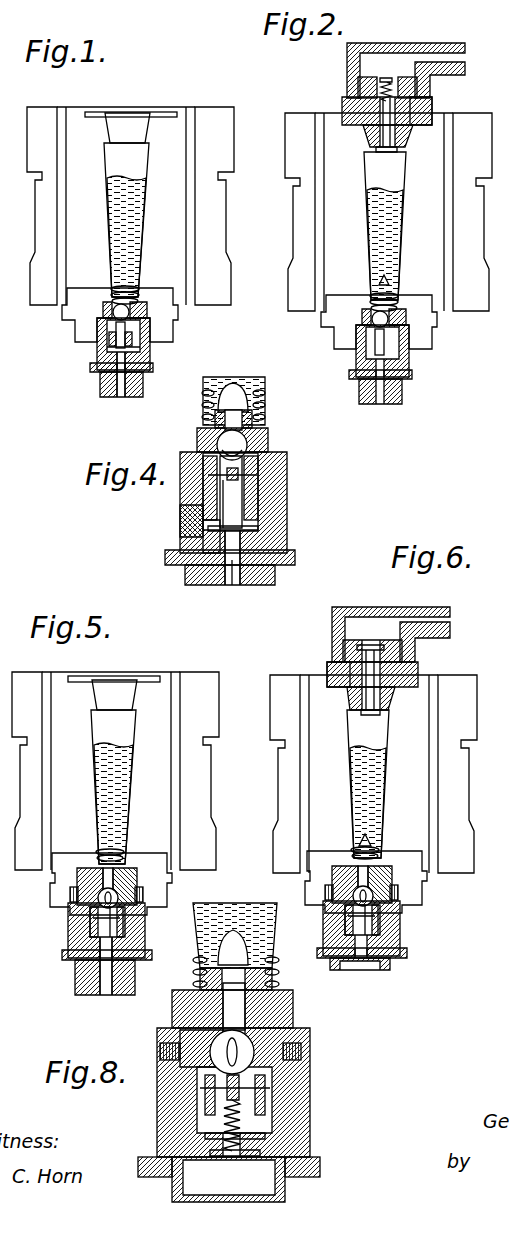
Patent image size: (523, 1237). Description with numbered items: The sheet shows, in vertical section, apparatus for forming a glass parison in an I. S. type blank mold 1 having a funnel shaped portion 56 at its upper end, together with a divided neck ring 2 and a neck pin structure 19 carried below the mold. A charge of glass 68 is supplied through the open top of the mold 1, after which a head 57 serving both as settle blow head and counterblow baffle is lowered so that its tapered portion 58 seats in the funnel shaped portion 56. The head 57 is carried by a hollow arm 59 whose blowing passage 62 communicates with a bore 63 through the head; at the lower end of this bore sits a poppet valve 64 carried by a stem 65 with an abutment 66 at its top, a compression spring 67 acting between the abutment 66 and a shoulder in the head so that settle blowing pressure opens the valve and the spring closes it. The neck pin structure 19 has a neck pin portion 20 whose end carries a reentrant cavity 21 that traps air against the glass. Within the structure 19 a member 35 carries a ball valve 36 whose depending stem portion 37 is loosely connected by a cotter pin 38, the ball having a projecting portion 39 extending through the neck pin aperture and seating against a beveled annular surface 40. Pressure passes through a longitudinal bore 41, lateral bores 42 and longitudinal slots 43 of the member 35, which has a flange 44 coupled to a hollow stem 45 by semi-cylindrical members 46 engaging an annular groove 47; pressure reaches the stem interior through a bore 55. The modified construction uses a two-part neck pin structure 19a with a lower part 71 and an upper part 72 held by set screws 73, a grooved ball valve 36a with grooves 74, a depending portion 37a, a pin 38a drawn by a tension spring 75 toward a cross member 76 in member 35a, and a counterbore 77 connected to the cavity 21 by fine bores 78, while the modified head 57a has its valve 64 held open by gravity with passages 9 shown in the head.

In FIG. 1, the blank mold 1 is at (200, 220).
In FIG. 2, the blank mold 1 is at (462, 227).
In FIG. 5, the blank mold 1 is at (190, 794).
In FIG. 6, the blank mold 1 is at (440, 779).
In FIG. 1, the neck ring 2 is at (165, 331).
In FIG. 2, the neck ring 2 is at (395, 322).
In FIG. 5, the neck ring 2 is at (155, 894).
In FIG. 6, the neck ring 2 is at (376, 873).
In FIG. 6, the passages 9 is at (358, 645).
In FIG. 1, the neck pin structure 19 is at (150, 357).
In FIG. 2, the neck pin structure 19 is at (410, 351).
In FIG. 4, the neck pin structure 19 is at (288, 490).
In FIG. 5, the neck pin structure 19a is at (146, 932).
In FIG. 6, the neck pin structure 19a is at (392, 928).
In FIG. 8, the neck pin structure 19a is at (300, 1112).
In FIG. 1, the neck pin portion 20 is at (136, 305).
In FIG. 2, the neck pin portion 20 is at (402, 231).
In FIG. 4, the neck pin portion 20 is at (266, 420).
In FIG. 4, the reentrant cavity 21 is at (265, 392).
In FIG. 8, the reentrant cavity 21 is at (198, 940).
In FIG. 1, the member 35 is at (97, 336).
In FIG. 4, the member 35 is at (259, 505).
In FIG. 8, the member 35a is at (210, 1105).
In FIG. 1, the ball valve 36 is at (105, 312).
In FIG. 2, the ball valve 36 is at (367, 293).
In FIG. 4, the ball valve 36 is at (248, 442).
In FIG. 5, the ball valve 36a is at (72, 892).
In FIG. 6, the ball valve 36a is at (336, 890).
In FIG. 8, the ball valve 36a is at (245, 1045).
In FIG. 4, the depending stem portion 37 is at (210, 486).
In FIG. 6, the depending stem portion 37 is at (335, 920).
In FIG. 8, the depending portion 37a is at (215, 1097).
In FIG. 4, the cotter pin 38 is at (252, 476).
In FIG. 8, the pin 38a is at (268, 1088).
In FIG. 4, the projecting portion 39 is at (206, 420).
In FIG. 4, the beveled annular surface 40 is at (198, 441).
In FIG. 4, the longitudinal bore 41 is at (256, 518).
In FIG. 4, the lateral bores 42 is at (195, 530).
In FIG. 4, the longitudinal slots 43 is at (200, 510).
In FIG. 4, the flange 44 is at (262, 531).
In FIG. 1, the hollow stem 45 is at (103, 385).
In FIG. 2, the hollow stem 45 is at (397, 400).
In FIG. 4, the hollow stem 45 is at (276, 582).
In FIG. 5, the hollow stem 45 is at (80, 990).
In FIG. 6, the hollow stem 45 is at (360, 964).
In FIG. 8, the hollow stem 45 is at (268, 1195).
In FIG. 1, the semi-cylindrical members 46 is at (97, 358).
In FIG. 2, the semi-cylindrical members 46 is at (379, 375).
In FIG. 4, the semi-cylindrical members 46 is at (292, 556).
In FIG. 5, the semi-cylindrical members 46 is at (75, 968).
In FIG. 6, the semi-cylindrical members 46 is at (362, 953).
In FIG. 8, the semi-cylindrical members 46 is at (303, 1172).
In FIG. 4, the annular groove 47 is at (244, 585).
In FIG. 1, the bore 55 is at (120, 390).
In FIG. 4, the bore 55 is at (230, 570).
In FIG. 5, the bore 55 is at (106, 990).
In FIG. 1, the funnel shaped portion 56 is at (112, 128).
In FIG. 2, the head 57 is at (345, 100).
In FIG. 6, the head 57a is at (415, 672).
In FIG. 2, the tapered portion 58 is at (404, 131).
In FIG. 2, the arm 59 is at (458, 43).
In FIG. 6, the arm 59 is at (425, 607).
In FIG. 2, the blowing passage 62 is at (445, 66).
In FIG. 6, the blowing passage 62 is at (450, 624).
In FIG. 6, the bore 63 is at (375, 698).
In FIG. 2, the poppet valve 64 is at (388, 153).
In FIG. 6, the poppet valve 64 is at (366, 715).
In FIG. 2, the stem 65 is at (383, 128).
In FIG. 6, the stem 65 is at (335, 670).
In FIG. 2, the abutment 66 is at (367, 78).
In FIG. 6, the abutment 66 is at (343, 647).
In FIG. 2, the compression spring 67 is at (432, 109).
In FIG. 1, the charge of glass 68 is at (131, 219).
In FIG. 8, the lower part 71 is at (292, 1130).
In FIG. 8, the upper part 72 is at (294, 1005).
In FIG. 8, the set screws 73 is at (160, 1048).
In FIG. 5, the grooves 74 is at (135, 870).
In FIG. 6, the grooves 74 is at (388, 896).
In FIG. 8, the grooves 74 is at (210, 1032).
In FIG. 8, the tension spring 75 is at (275, 1147).
In FIG. 8, the cross member 76 is at (172, 1142).
In FIG. 8, the counterbore 77 is at (226, 1005).
In FIG. 8, the fine bores 78 is at (262, 970).